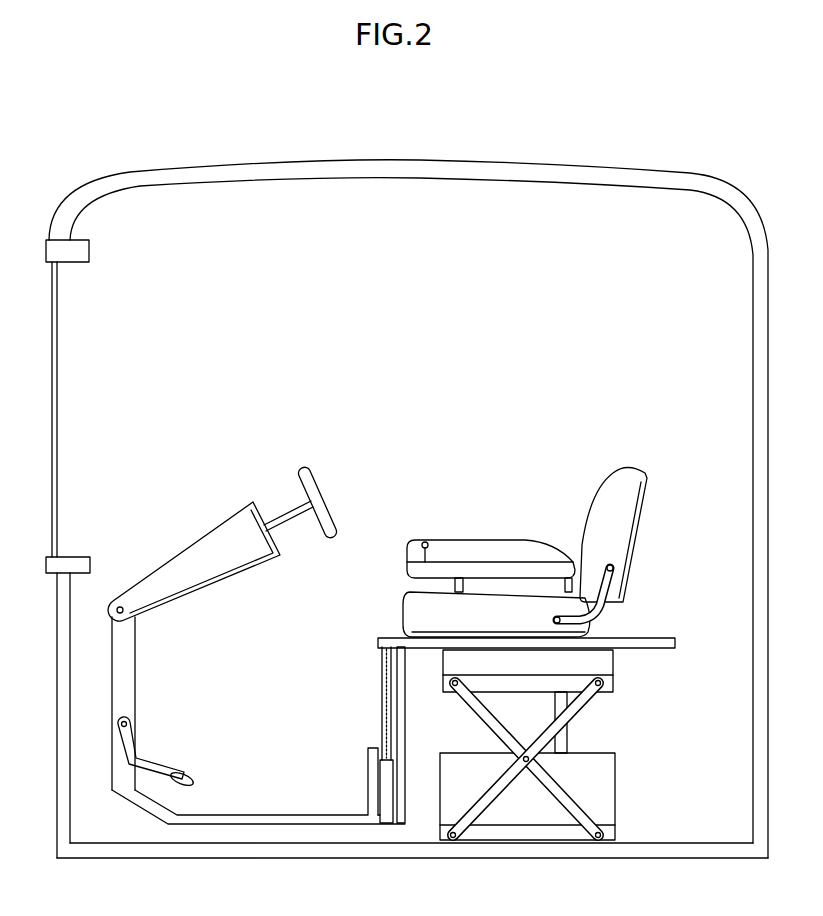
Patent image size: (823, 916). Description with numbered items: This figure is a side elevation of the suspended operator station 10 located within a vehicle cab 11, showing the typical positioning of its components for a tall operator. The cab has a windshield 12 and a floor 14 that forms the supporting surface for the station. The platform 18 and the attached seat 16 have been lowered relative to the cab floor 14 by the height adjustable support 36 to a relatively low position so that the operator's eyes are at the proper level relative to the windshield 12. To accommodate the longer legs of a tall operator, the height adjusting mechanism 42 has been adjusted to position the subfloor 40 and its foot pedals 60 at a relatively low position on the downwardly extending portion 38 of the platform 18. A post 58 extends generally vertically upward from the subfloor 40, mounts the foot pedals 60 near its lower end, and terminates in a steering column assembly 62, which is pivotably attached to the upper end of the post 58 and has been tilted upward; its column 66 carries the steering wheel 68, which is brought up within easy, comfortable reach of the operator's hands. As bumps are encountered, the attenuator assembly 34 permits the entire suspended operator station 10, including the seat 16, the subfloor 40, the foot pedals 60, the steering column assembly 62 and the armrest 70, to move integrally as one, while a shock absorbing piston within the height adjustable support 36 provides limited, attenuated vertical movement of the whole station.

The suspended operator station 10 is at (463, 483).
The vehicle cab 11 is at (340, 170).
The windshield 12 is at (52, 385).
The floor 14 is at (687, 850).
The seat 16 is at (593, 628).
The platform 18 is at (653, 645).
The attenuator assembly 34 is at (603, 667).
The height adjustable support 36 is at (607, 775).
The downwardly extending portion 38 is at (398, 738).
The subfloor 40 is at (240, 815).
The height adjusting mechanism 42 is at (380, 707).
The post 58 is at (130, 665).
The foot pedals 60 is at (155, 762).
The steering column assembly 62 is at (188, 547).
The column 66 is at (297, 512).
The steering wheel 68 is at (307, 472).
The armrest 70 is at (463, 537).